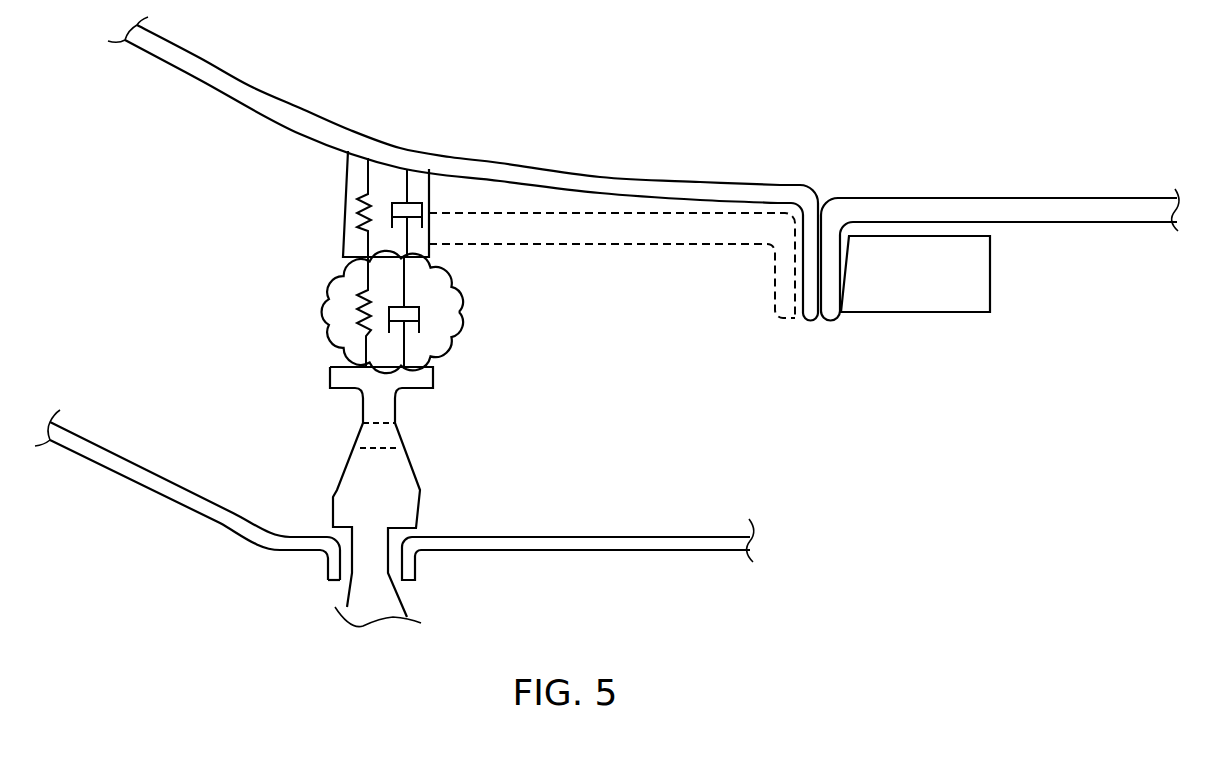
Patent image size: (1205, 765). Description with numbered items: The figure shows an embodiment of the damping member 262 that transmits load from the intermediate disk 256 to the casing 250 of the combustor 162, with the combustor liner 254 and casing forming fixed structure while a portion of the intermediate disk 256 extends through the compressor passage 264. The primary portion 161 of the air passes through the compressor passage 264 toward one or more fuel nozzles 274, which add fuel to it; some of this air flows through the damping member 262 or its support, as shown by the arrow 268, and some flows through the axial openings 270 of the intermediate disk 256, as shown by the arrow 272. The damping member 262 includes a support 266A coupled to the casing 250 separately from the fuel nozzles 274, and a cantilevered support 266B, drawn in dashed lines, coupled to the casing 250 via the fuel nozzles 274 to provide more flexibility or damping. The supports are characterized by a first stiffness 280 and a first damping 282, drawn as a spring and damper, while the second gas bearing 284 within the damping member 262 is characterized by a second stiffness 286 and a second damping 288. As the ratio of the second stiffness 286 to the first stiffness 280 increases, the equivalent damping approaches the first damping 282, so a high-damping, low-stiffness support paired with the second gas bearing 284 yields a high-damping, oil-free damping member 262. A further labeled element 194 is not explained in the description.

The primary portion of the air 161 is at (610, 452).
The combustor 162 is at (1085, 198).
The air flow from compressor discharge 194 is at (282, 568).
The casing 250 is at (611, 182).
The combustor liner 254 is at (617, 552).
The intermediate disk 256 is at (392, 598).
The damping member 262 is at (470, 272).
The compressor passage 264 is at (188, 173).
The support 266A is at (417, 182).
The support 266B is at (620, 246).
The arrow 268 is at (323, 248).
The axial openings 270 is at (383, 452).
The arrow 272 is at (338, 452).
The fuel nozzle 274 is at (992, 275).
The first stiffness 280 is at (368, 172).
The first damping 282 is at (402, 182).
The second gas bearing 284 is at (345, 340).
The second stiffness 286 is at (348, 313).
The second damping 288 is at (435, 345).